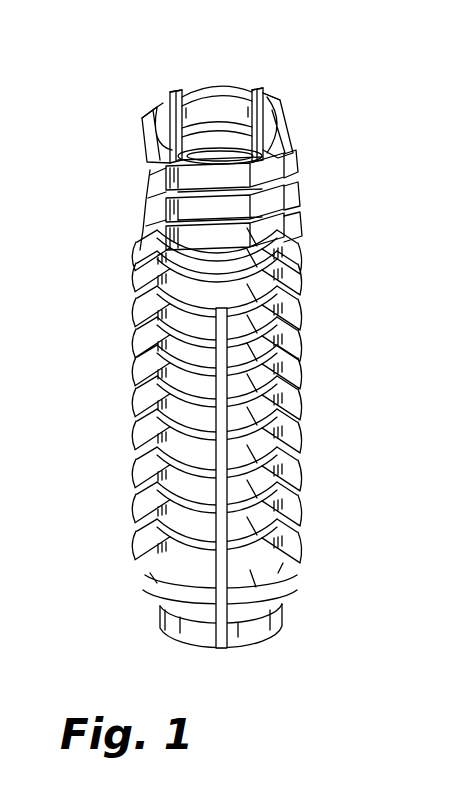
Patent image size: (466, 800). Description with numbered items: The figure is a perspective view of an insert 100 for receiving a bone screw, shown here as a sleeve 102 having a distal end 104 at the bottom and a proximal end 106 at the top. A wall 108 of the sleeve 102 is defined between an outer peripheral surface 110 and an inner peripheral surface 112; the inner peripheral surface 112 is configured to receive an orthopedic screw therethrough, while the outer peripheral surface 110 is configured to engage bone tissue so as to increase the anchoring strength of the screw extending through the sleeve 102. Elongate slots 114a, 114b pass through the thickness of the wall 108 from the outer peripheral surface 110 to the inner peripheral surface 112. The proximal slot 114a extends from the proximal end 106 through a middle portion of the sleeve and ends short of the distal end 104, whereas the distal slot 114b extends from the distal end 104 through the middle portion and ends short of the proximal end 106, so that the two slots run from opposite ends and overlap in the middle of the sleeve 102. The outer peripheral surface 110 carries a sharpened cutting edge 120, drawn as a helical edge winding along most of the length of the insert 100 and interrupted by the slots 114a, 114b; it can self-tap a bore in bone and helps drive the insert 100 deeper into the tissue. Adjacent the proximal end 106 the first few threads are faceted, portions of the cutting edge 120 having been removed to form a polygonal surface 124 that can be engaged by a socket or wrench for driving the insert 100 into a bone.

The insert 100 is at (323, 106).
The sleeve 102 is at (128, 528).
The distal end 104 is at (166, 634).
The proximal end 106 is at (156, 111).
The wall 108 is at (142, 350).
The outer peripheral surface 110 is at (291, 497).
The inner peripheral surface 112 is at (224, 106).
The proximal slot 114a is at (176, 92).
The distal slot 114b is at (226, 649).
The cutting edge 120 is at (292, 528).
The polygonal surface 124 is at (152, 194).